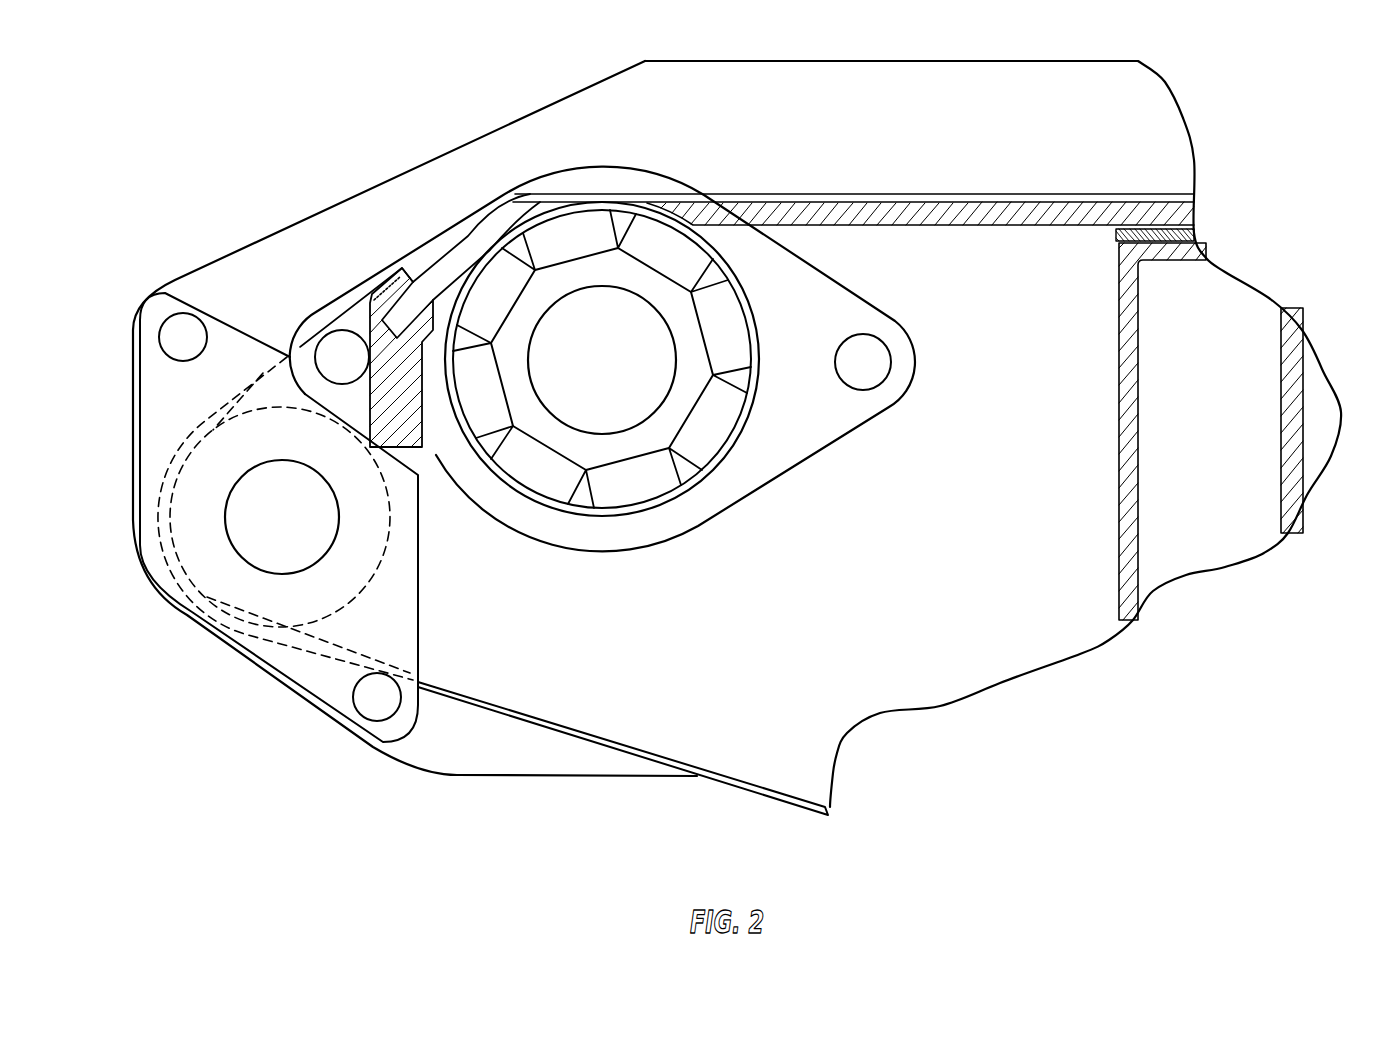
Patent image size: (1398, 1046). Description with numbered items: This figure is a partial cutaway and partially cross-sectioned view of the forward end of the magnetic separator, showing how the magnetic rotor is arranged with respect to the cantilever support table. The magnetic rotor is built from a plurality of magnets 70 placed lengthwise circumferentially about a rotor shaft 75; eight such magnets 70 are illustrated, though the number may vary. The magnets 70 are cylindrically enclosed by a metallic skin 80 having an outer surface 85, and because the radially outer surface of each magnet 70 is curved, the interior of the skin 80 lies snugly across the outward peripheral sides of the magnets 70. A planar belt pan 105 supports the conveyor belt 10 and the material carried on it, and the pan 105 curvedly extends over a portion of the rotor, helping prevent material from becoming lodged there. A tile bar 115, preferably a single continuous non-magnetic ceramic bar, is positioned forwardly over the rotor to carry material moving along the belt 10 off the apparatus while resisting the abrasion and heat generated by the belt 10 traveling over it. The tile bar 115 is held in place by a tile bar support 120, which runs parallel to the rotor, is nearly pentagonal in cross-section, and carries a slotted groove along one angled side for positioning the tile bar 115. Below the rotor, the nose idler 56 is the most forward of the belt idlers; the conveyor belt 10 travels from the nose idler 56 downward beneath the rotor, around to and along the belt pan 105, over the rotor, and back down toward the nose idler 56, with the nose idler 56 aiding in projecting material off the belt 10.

The conveyor belt 10 is at (908, 197).
The nose idler 56 is at (227, 590).
The magnets 70 is at (633, 492).
The rotor shaft 75 is at (589, 370).
The metallic skin 80 is at (703, 482).
The outer surface 85 is at (745, 437).
The belt pan 105 is at (1030, 212).
The tile bar 115 is at (460, 250).
The tile bar support 120 is at (373, 298).